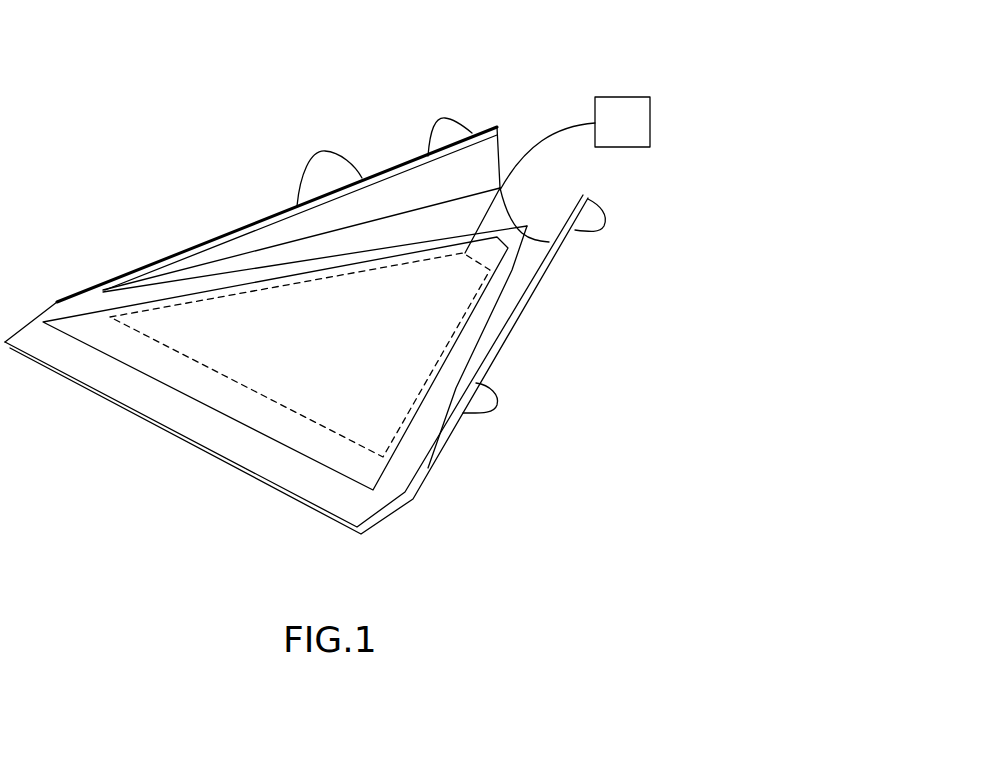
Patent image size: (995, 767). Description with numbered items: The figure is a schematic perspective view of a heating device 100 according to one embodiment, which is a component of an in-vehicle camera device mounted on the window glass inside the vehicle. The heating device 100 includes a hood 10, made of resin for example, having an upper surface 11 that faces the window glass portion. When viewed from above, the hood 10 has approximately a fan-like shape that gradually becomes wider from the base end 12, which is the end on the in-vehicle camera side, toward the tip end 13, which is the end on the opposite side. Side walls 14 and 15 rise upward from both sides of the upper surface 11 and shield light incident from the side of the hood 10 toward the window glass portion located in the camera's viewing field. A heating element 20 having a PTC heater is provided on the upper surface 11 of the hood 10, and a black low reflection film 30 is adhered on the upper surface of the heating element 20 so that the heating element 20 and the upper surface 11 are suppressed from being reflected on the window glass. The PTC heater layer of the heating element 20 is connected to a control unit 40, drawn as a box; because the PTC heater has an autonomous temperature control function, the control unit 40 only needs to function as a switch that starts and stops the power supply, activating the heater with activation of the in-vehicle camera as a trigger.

The heating device 100 is at (480, 82).
The hood 10 is at (259, 195).
The upper surface 11 is at (188, 290).
The base end 12 is at (525, 207).
The tip end 13 is at (220, 486).
The side wall 14 is at (410, 162).
The side wall 15 is at (553, 256).
The heating element 20 is at (423, 333).
The low reflection film 30 is at (342, 460).
The control unit 40 is at (630, 97).